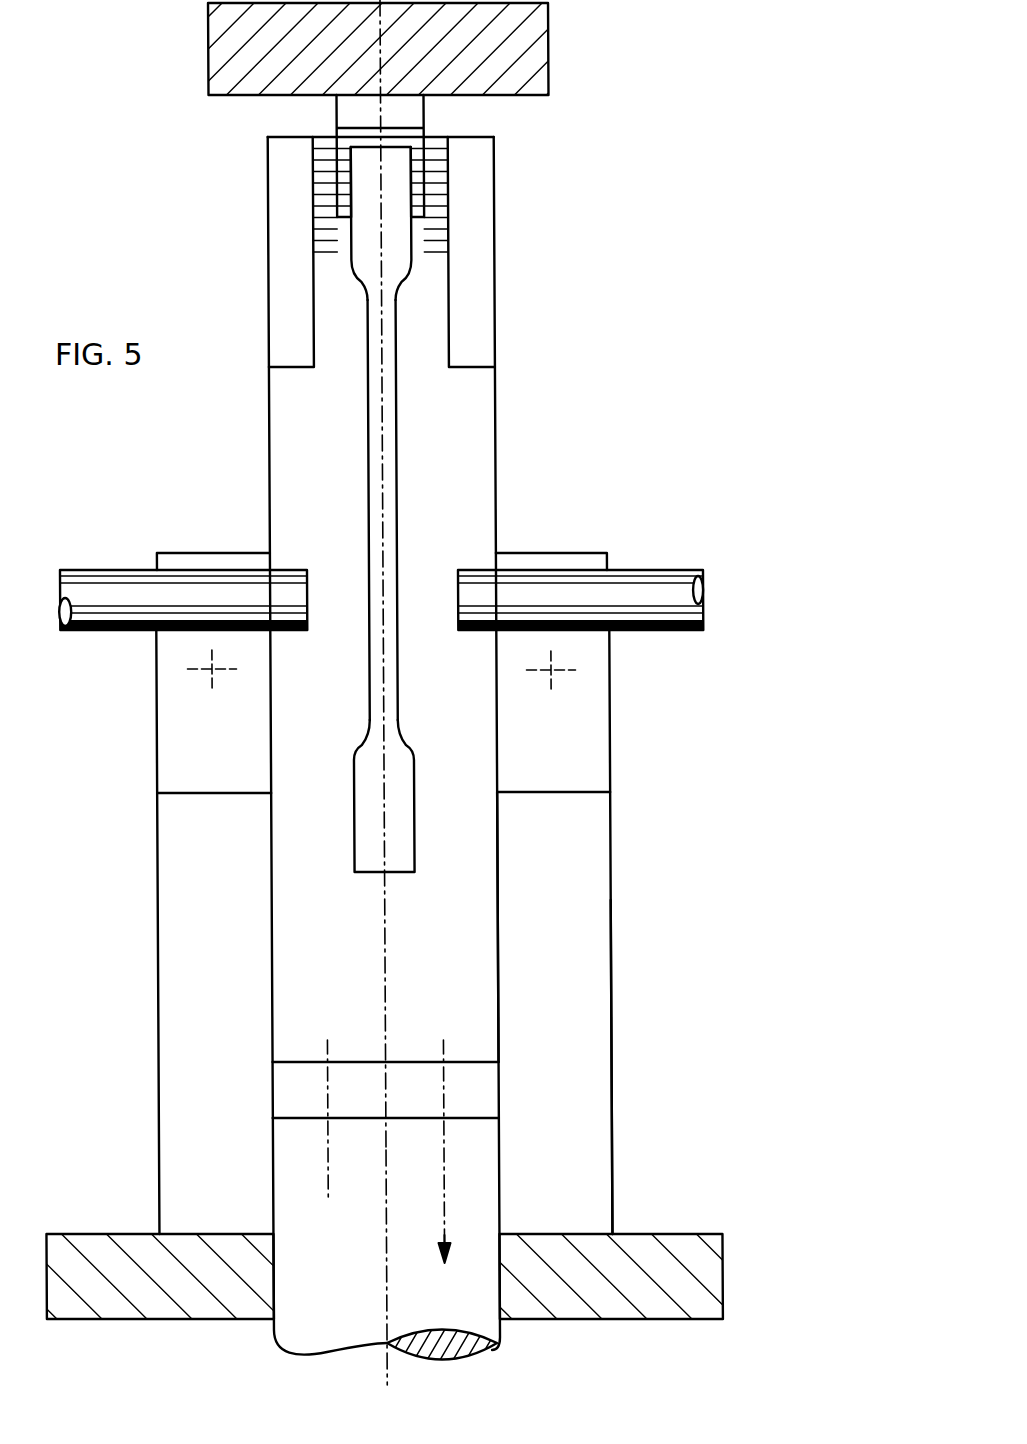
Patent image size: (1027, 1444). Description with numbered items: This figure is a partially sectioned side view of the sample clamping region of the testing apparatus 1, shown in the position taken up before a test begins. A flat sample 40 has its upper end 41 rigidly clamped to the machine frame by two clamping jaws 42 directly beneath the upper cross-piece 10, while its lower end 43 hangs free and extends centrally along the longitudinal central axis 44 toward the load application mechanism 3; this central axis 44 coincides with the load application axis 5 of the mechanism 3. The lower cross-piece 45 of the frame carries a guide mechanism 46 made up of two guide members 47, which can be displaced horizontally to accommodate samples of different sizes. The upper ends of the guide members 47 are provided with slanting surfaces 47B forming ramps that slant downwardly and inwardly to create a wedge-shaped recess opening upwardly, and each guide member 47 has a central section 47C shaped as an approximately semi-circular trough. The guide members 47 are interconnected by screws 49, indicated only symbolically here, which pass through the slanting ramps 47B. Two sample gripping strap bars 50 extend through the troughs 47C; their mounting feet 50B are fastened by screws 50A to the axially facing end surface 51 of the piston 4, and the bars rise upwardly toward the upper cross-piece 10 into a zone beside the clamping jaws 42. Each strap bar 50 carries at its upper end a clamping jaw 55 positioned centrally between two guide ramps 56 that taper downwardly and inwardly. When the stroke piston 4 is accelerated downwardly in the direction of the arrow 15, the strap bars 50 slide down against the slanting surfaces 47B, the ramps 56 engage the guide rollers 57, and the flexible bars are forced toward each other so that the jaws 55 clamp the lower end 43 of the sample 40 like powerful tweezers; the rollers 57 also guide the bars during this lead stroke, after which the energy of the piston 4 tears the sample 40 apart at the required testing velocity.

The apparatus 1 is at (602, 115).
The load application mechanism 3 is at (507, 1157).
The piston 4 is at (477, 1220).
The load application axis 5 is at (382, 1235).
The upper cross-piece 10 is at (500, 52).
The arrow 15 is at (443, 1240).
The flat sample 40 is at (388, 427).
The upper end 41 is at (393, 222).
The clamping jaws 42 is at (420, 153).
The lower end 43 is at (397, 832).
The central axis 44 is at (384, 515).
The lower cross-piece 45 is at (673, 1268).
The guide mechanism 46 is at (615, 1020).
The guide members 47 is at (557, 970).
The slanting surfaces 47B is at (195, 765).
The central section 47C is at (498, 920).
The screws 49 is at (208, 672).
The sample gripping strap bars 50 is at (297, 459).
The screws 50A is at (328, 1045).
The mounting feet 50B is at (465, 1078).
The end surface 51 is at (458, 1117).
The clamping jaws 55 is at (325, 190).
The guide ramps 56 is at (290, 282).
The guide rollers 57 is at (120, 595).